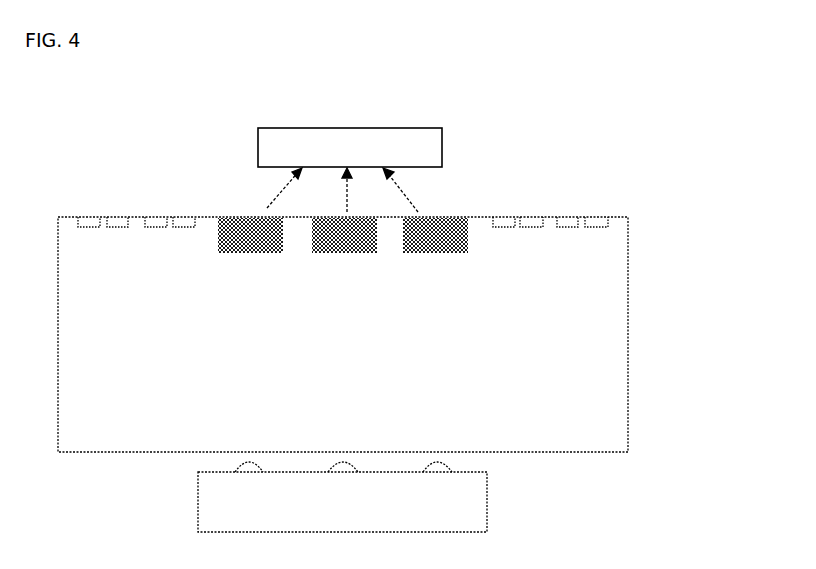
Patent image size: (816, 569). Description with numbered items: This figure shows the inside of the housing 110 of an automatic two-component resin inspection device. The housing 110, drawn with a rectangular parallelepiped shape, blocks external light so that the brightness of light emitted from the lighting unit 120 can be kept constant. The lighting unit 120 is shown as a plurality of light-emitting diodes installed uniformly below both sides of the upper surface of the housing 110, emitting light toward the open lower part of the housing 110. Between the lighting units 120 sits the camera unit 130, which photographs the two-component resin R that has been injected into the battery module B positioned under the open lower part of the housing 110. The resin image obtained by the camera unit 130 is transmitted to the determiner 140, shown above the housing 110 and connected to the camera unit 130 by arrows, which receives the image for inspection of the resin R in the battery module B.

The housing 110 is at (630, 220).
The lighting unit 120 is at (598, 216).
The camera unit 130 is at (433, 246).
The determiner 140 is at (345, 127).
The battery module B is at (200, 500).
The two-component resin R is at (440, 462).